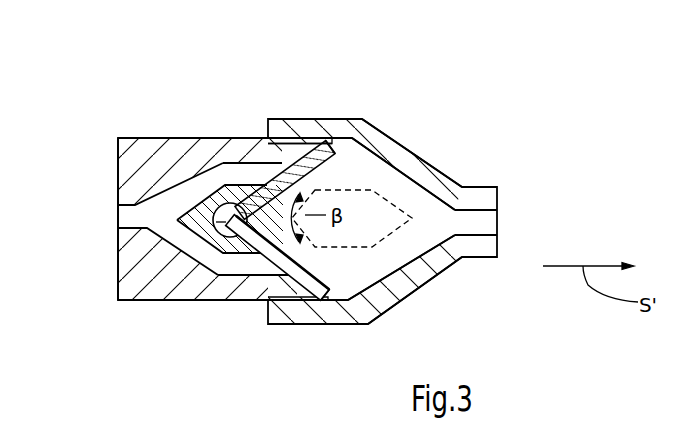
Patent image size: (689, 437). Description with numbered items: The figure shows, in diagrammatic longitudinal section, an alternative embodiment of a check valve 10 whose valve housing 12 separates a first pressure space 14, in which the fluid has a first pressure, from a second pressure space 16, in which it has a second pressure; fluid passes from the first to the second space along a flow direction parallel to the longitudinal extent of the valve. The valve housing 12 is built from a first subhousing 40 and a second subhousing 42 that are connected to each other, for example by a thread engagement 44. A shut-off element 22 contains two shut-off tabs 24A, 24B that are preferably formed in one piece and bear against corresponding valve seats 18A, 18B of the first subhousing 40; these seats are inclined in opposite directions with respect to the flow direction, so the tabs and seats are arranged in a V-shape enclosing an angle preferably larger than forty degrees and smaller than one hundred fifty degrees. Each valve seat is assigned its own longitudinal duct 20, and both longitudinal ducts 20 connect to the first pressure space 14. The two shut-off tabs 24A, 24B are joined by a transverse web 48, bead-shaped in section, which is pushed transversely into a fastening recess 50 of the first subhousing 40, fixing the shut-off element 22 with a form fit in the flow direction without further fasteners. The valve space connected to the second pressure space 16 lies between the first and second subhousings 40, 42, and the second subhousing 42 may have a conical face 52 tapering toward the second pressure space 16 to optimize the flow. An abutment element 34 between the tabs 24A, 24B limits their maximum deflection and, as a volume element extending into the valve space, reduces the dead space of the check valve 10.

The check valve 10 is at (482, 133).
The valve housing 12 is at (150, 137).
The first pressure space 14 is at (133, 218).
The second pressure space 16 is at (483, 216).
The valve seat 18A is at (336, 148).
The valve seat 18B is at (326, 292).
The longitudinal duct 20 is at (222, 147).
The shut-off element 22 is at (282, 170).
The shut-off tab 24A is at (332, 175).
The shut-off tab 24B is at (339, 268).
The abutment element 34 is at (428, 275).
The first subhousing 40 is at (117, 147).
The second subhousing 42 is at (417, 160).
The thread engagement 44 is at (277, 165).
The transverse web 48 is at (188, 242).
The fastening recess 50 is at (243, 203).
The conical face 52 is at (457, 183).